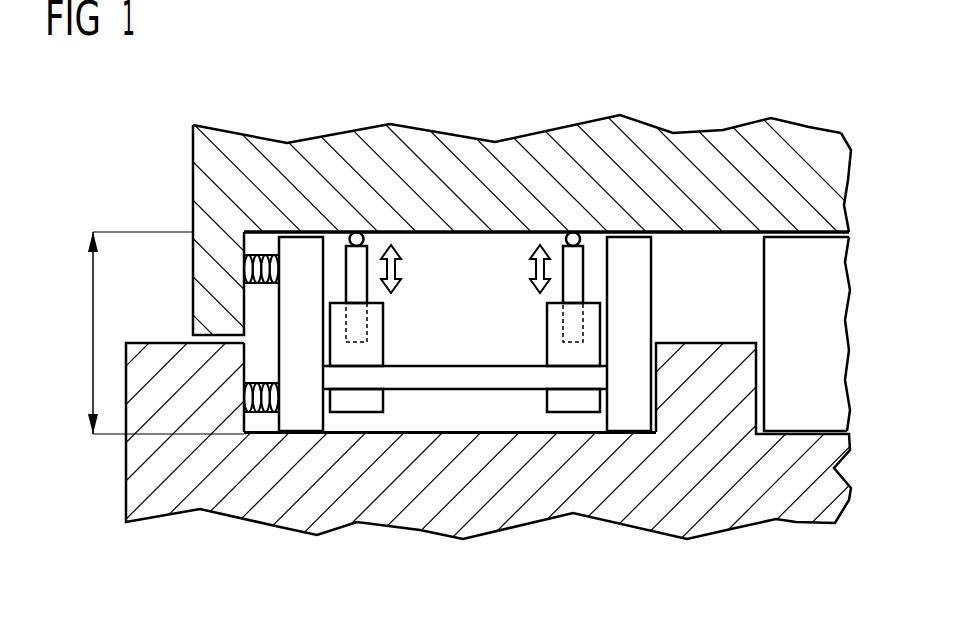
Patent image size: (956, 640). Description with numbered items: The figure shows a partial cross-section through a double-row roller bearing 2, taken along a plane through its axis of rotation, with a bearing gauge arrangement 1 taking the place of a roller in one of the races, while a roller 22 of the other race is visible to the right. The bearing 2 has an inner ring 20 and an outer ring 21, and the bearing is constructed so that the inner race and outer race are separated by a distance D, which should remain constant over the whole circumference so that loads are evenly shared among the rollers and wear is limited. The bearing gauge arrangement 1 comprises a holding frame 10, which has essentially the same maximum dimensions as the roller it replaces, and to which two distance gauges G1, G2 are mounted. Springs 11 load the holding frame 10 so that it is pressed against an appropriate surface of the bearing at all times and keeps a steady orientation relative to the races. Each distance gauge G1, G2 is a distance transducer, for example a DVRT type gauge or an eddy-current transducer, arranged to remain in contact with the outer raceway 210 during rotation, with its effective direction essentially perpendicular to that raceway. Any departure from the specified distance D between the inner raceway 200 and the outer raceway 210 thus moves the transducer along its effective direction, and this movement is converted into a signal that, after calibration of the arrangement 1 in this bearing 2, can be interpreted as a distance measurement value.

The bearing gauge arrangement 1 is at (333, 100).
The roller bearing 2 is at (786, 101).
The outer ring 21 is at (538, 148).
The outer raceway 210 is at (456, 238).
The inner raceway 200 is at (425, 416).
The roller 22 is at (817, 349).
The inner ring 20 is at (620, 505).
The holding frame 10 is at (310, 420).
The springs 11 is at (270, 385).
The first distance gauge G1 is at (373, 398).
The second distance gauge G2 is at (577, 398).
The distance D is at (92, 338).